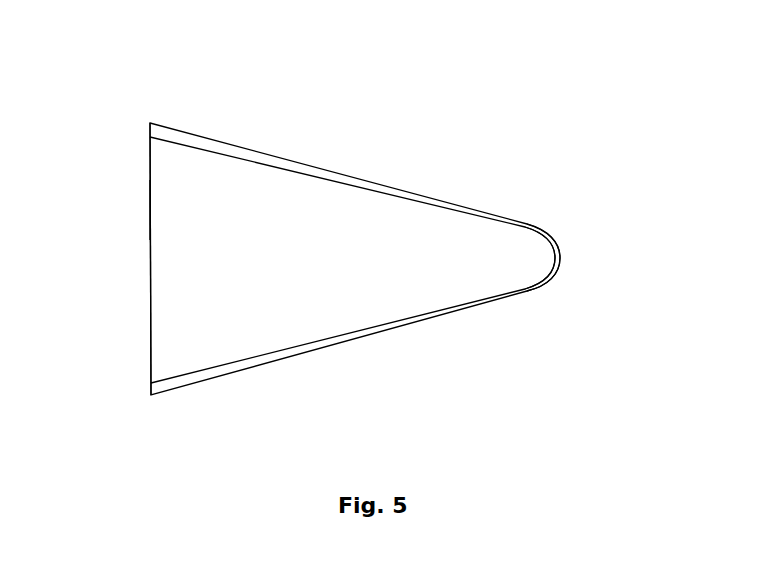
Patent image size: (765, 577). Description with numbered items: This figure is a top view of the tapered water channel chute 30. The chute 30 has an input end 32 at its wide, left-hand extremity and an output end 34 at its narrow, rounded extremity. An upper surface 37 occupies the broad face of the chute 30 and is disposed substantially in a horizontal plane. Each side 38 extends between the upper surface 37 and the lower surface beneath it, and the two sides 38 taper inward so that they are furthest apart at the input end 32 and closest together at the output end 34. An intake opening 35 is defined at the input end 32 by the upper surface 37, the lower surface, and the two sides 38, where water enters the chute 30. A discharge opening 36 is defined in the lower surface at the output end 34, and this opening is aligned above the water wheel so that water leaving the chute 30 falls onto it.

The tapered water channel chute 30 is at (355, 142).
The input end 32 is at (150, 288).
The output end 34 is at (560, 253).
The intake opening 35 is at (148, 212).
The discharge opening 36 is at (551, 287).
The upper surface 37 is at (313, 268).
The side 38 is at (362, 181).